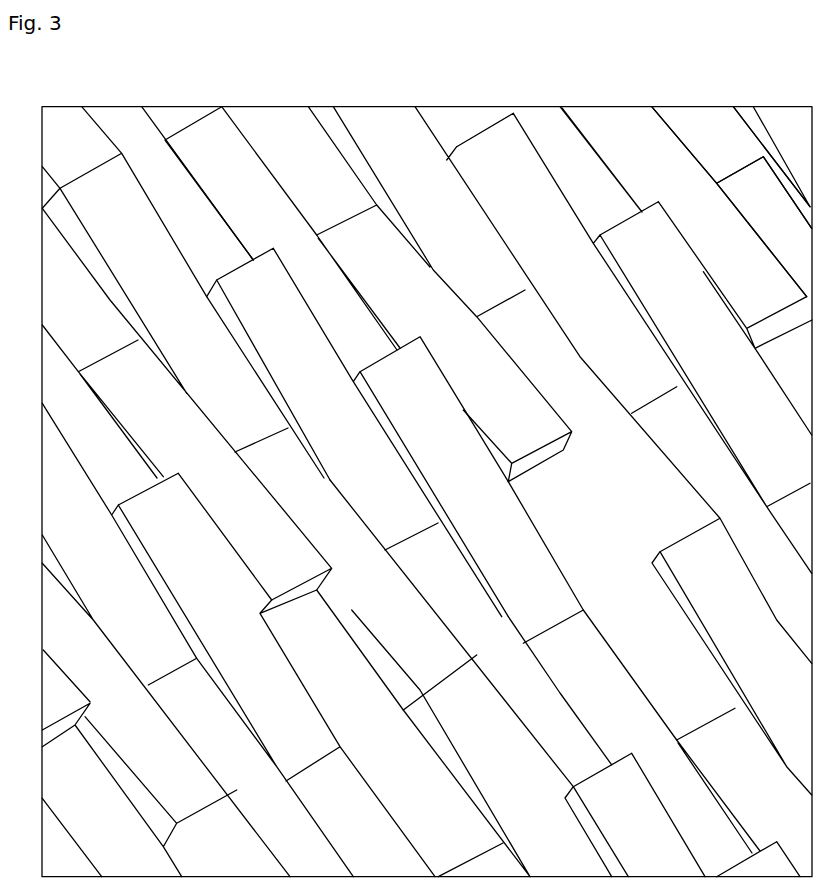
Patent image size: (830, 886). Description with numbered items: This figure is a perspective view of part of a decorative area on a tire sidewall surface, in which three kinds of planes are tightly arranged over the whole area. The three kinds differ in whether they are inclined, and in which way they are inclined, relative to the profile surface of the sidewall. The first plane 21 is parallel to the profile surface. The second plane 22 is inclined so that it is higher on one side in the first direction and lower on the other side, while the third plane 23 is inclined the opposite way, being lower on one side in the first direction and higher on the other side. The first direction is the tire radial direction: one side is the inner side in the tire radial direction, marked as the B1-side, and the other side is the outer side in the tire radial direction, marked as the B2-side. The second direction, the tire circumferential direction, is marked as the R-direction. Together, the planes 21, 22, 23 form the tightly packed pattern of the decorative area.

The first plane 21 is at (262, 222).
The second plane 22 is at (226, 490).
The third plane 23 is at (170, 290).
The B1-side B1 is at (693, 219).
The B2-side B2 is at (677, 176).
The R-direction R is at (775, 280).